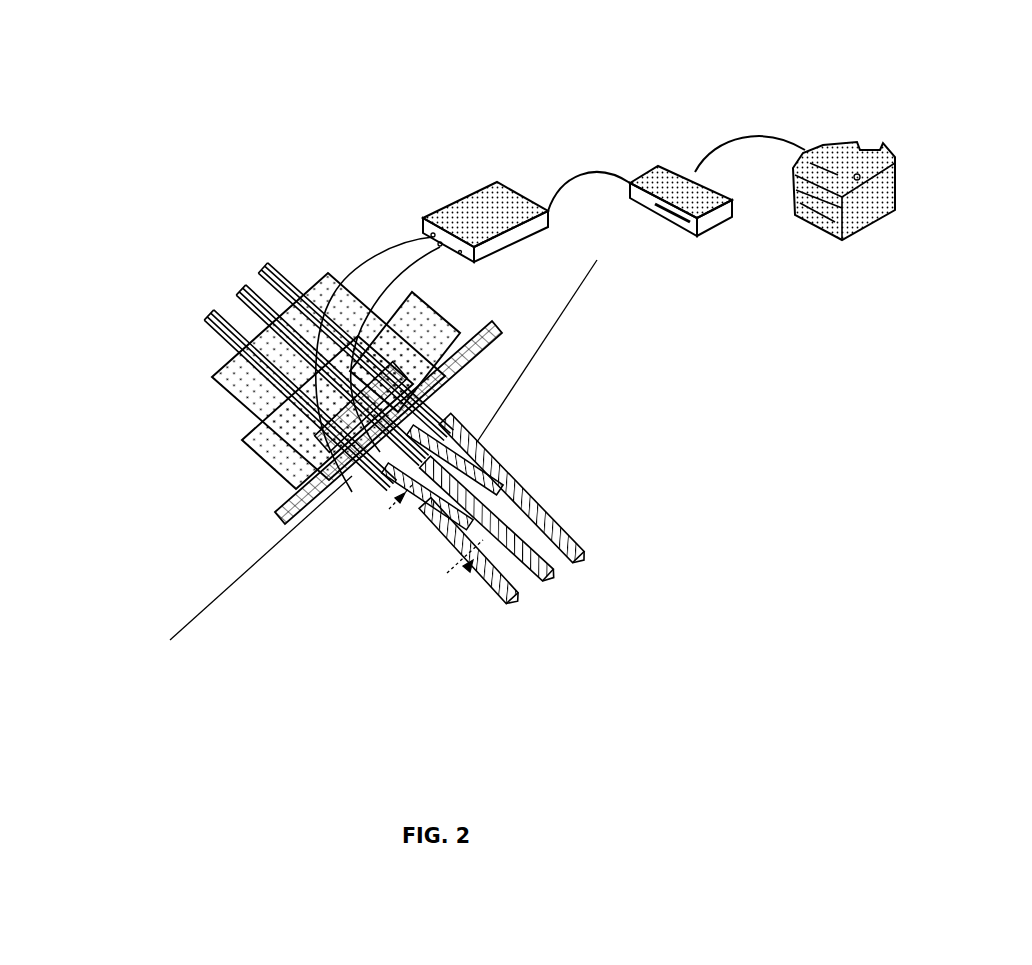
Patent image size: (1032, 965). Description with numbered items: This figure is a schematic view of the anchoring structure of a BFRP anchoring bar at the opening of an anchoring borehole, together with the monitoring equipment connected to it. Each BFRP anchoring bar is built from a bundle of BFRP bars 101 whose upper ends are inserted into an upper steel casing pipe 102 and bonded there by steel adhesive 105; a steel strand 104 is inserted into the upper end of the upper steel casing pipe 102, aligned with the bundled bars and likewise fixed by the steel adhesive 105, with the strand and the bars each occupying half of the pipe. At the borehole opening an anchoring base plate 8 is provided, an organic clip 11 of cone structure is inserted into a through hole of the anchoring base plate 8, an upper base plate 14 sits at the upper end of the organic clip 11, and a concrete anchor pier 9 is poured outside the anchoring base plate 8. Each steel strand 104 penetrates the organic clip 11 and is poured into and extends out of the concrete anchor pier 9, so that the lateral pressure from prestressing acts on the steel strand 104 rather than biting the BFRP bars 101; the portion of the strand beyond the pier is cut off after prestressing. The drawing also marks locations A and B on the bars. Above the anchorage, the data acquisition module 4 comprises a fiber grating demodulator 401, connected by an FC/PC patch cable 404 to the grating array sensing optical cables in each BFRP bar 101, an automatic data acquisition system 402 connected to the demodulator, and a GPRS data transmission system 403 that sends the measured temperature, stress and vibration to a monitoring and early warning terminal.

The data acquisition module 4 is at (858, 97).
The fiber grating demodulator 401 is at (483, 210).
The automatic data acquisition system 402 is at (668, 180).
The GPRS data transmission system 403 is at (820, 157).
The FC/PC patch cable 404 is at (343, 280).
The steel strand 104 is at (242, 300).
The concrete anchor pier 9 is at (240, 400).
The upper base plate 14 is at (323, 438).
The anchoring base plate 8 is at (287, 513).
The steel adhesive 105 is at (473, 443).
The upper steel casing pipe 102 is at (513, 478).
The BFRP bar 101 is at (538, 515).
The organic clip 11 is at (325, 503).
The position A is at (470, 570).
The position B is at (403, 500).